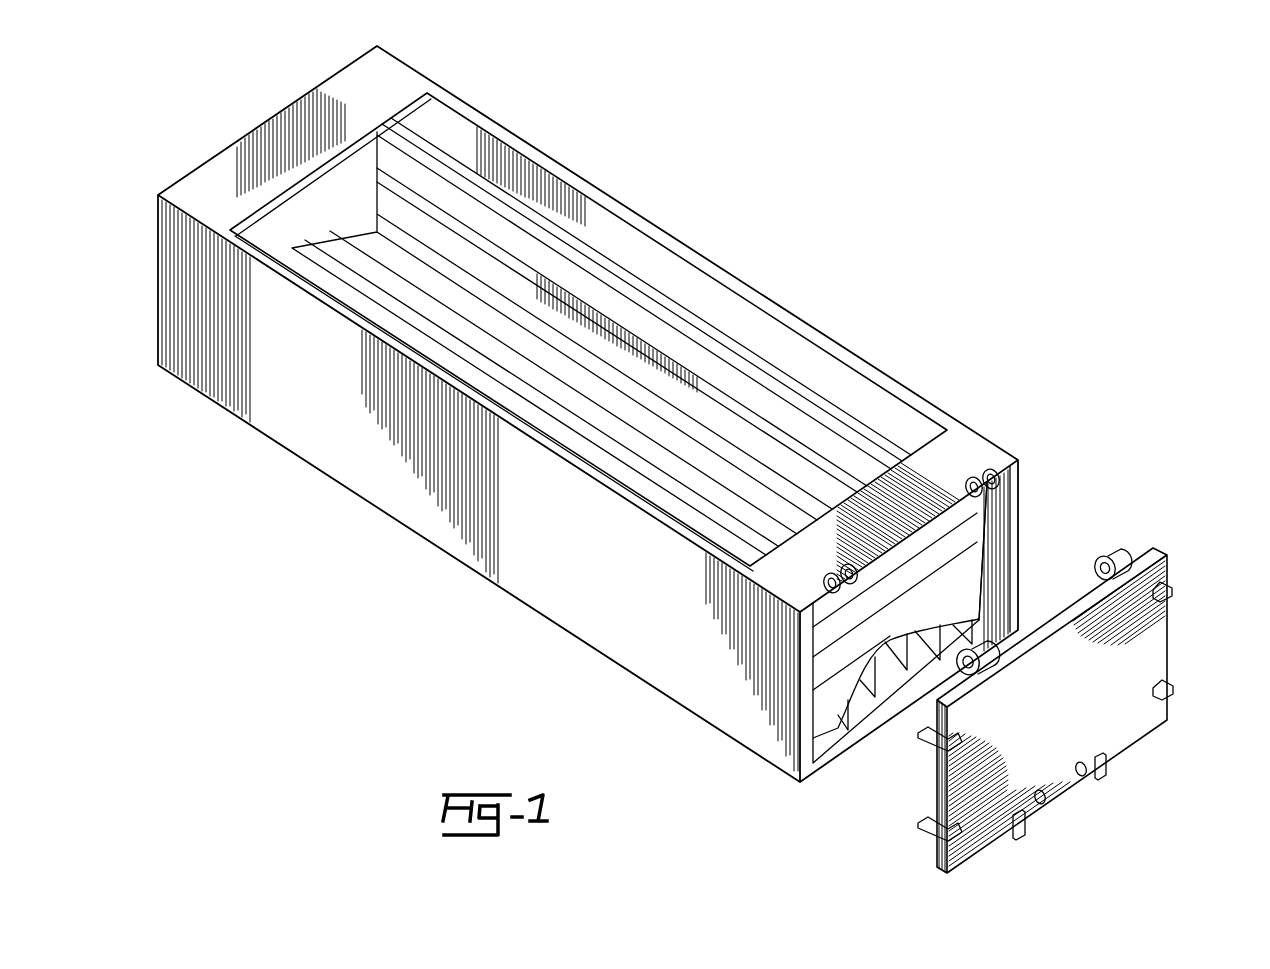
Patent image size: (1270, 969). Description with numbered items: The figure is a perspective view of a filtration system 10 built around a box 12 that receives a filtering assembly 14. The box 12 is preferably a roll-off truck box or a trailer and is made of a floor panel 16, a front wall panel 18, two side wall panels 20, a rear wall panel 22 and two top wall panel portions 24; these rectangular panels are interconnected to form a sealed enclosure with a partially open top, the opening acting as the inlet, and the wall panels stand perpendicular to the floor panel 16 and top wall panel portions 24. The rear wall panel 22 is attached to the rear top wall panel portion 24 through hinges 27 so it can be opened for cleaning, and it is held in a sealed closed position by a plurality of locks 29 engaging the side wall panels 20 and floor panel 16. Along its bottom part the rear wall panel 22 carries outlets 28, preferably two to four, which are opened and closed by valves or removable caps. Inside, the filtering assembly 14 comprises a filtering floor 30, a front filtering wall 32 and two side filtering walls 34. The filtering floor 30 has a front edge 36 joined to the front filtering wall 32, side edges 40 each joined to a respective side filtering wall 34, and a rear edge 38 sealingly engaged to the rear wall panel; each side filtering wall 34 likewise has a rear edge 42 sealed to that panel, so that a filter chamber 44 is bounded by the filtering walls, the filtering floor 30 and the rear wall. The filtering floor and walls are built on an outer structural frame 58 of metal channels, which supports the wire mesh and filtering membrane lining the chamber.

The filtration system 10 is at (714, 200).
The box 12 is at (793, 321).
The filtering assembly 14 is at (692, 321).
The floor panel 16 is at (840, 774).
The front wall panel 18 is at (158, 238).
The side wall panels 20 is at (1015, 500).
The rear wall panel 22 is at (1140, 680).
The top wall panel portions 24 is at (388, 72).
The hinges 27 is at (830, 583).
The outlets 28 is at (1093, 775).
The locks 29 is at (1167, 595).
The filtering floor 30 is at (832, 660).
The front filtering wall 32 is at (313, 187).
The side filtering walls 34 is at (505, 217).
The front edge 36 is at (289, 246).
The rear edge 38 is at (937, 628).
The side edges 40 is at (527, 304).
The rear edge 42 is at (982, 548).
The filter chamber 44 is at (439, 183).
The outer structural frame 58 is at (867, 685).